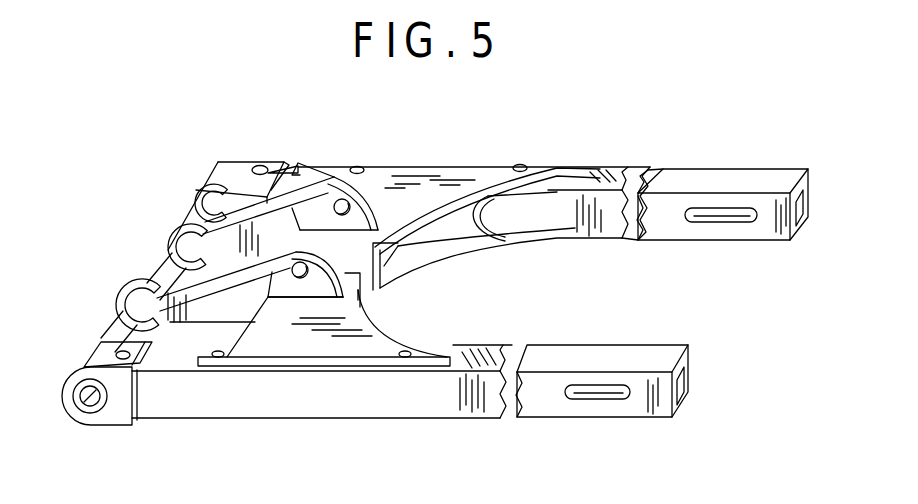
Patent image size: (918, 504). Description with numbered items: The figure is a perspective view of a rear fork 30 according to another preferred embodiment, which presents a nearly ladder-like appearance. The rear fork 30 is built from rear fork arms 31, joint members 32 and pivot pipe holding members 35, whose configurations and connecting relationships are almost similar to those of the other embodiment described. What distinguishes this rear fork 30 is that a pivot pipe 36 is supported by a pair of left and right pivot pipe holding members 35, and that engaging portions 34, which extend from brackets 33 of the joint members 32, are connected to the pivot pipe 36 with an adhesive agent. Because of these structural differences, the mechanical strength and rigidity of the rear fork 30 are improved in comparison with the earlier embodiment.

The rear fork 30 is at (452, 158).
The rear fork arm 31 is at (611, 230).
The joint member 32 is at (372, 340).
The bracket 33 is at (366, 200).
The engaging portion 34 is at (196, 218).
The pivot pipe holding member 35 is at (118, 412).
The pivot pipe 36 is at (166, 262).